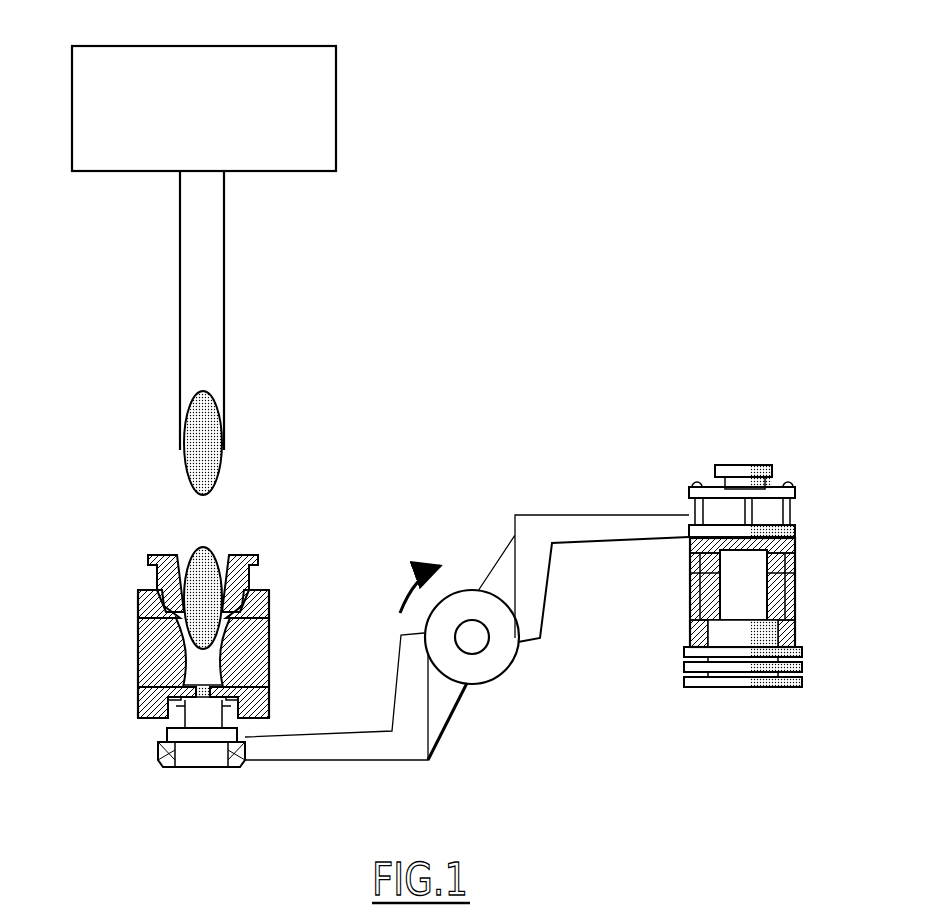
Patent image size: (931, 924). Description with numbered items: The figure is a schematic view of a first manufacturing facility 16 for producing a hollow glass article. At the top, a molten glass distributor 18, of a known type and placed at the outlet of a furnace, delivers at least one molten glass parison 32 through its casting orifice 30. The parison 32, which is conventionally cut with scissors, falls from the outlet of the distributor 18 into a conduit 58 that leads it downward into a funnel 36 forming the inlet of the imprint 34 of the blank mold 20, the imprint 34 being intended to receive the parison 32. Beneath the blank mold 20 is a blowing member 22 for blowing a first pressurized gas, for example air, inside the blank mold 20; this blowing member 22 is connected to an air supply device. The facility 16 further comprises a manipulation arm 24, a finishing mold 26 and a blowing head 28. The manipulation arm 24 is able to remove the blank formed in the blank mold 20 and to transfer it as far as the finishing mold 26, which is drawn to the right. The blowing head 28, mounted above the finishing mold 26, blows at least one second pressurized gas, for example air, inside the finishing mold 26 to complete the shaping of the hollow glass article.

The first manufacturing facility 16 is at (100, 314).
The molten glass distributor 18 is at (293, 120).
The casting orifice 30 is at (180, 173).
The conduit 58 is at (180, 353).
The molten glass parison 32 is at (200, 460).
The blank mold 20 is at (122, 621).
The funnel 36 is at (150, 563).
The imprint 34 is at (203, 661).
The blowing member 22 is at (172, 720).
The manipulation arm 24 is at (493, 694).
The finishing mold 26 is at (808, 591).
The blowing head 28 is at (810, 477).